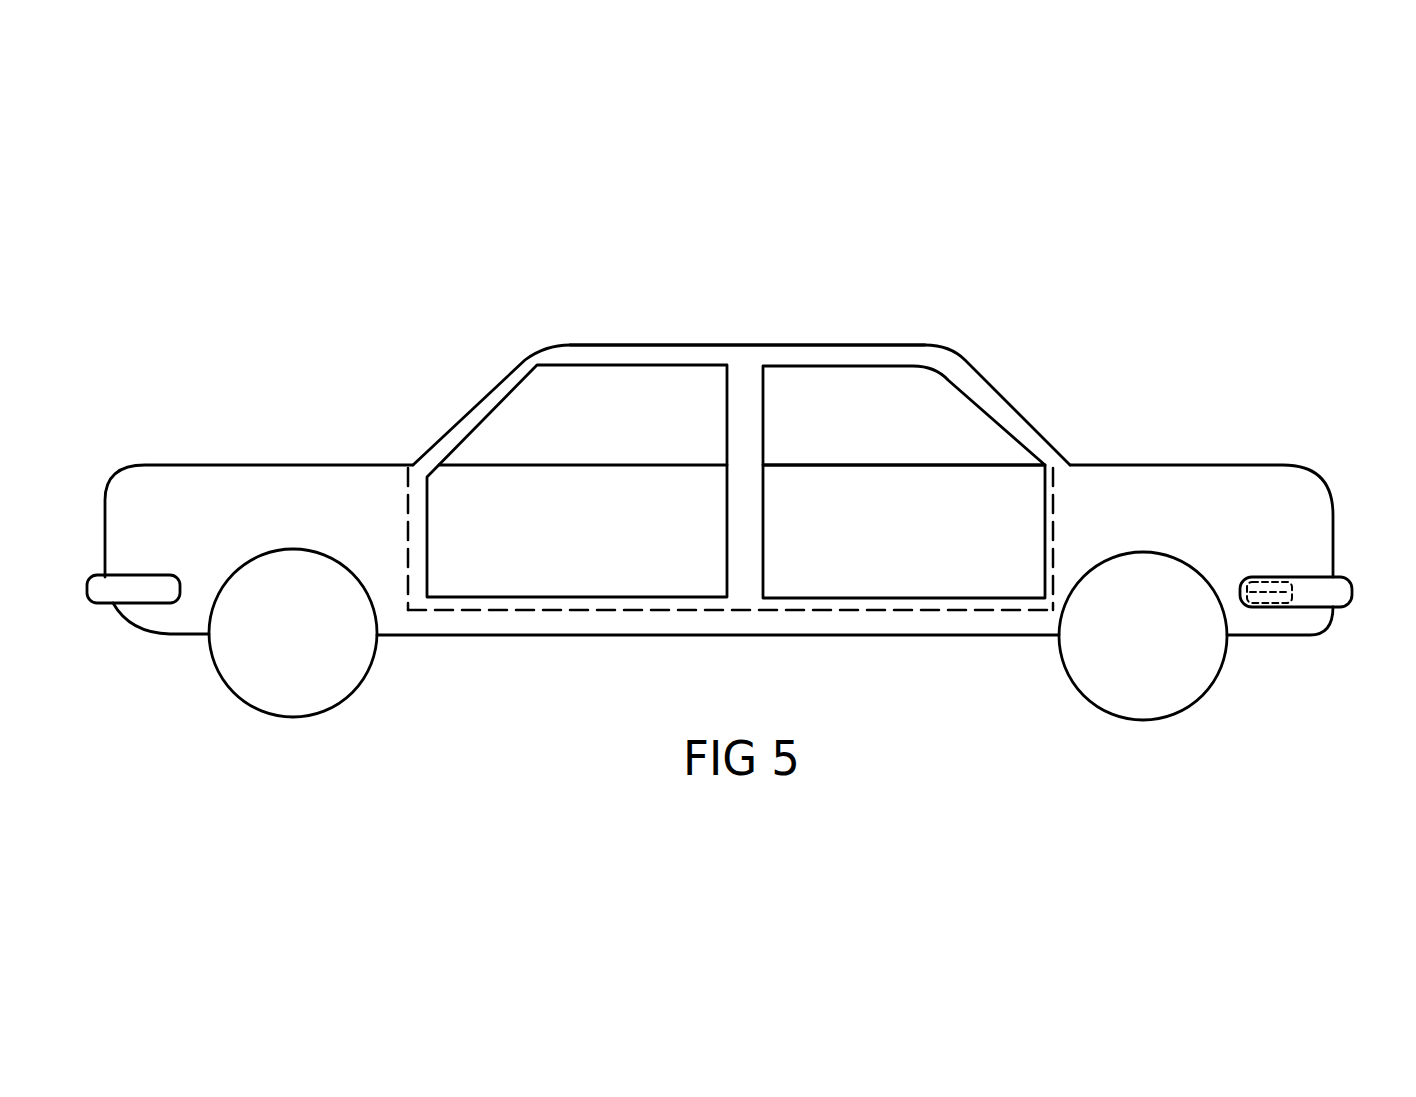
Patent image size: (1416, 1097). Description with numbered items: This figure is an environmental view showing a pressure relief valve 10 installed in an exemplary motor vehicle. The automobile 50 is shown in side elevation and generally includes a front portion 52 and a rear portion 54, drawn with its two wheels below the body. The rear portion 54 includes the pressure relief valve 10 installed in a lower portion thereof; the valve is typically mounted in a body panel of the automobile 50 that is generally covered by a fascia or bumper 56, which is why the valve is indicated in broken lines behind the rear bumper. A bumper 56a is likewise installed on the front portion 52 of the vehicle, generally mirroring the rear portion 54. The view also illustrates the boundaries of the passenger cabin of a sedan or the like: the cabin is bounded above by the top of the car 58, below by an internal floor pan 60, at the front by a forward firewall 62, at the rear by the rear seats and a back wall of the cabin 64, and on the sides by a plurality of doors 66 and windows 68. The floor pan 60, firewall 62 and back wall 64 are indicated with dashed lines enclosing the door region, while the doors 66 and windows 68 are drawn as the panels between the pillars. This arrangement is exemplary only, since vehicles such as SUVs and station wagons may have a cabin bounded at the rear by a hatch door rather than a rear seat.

The pressure relief valve 10 is at (1273, 605).
The automobile 50 is at (661, 288).
The front portion 52 is at (236, 448).
The rear portion 54 is at (1249, 452).
The bumper 56 is at (1342, 585).
The bumper 56a is at (100, 605).
The top of the car 58 is at (763, 345).
The internal floor pan 60 is at (755, 603).
The forward firewall 62 is at (405, 505).
The back wall of the cabin 64 is at (1058, 495).
The doors 66 is at (929, 552).
The windows 68 is at (898, 434).